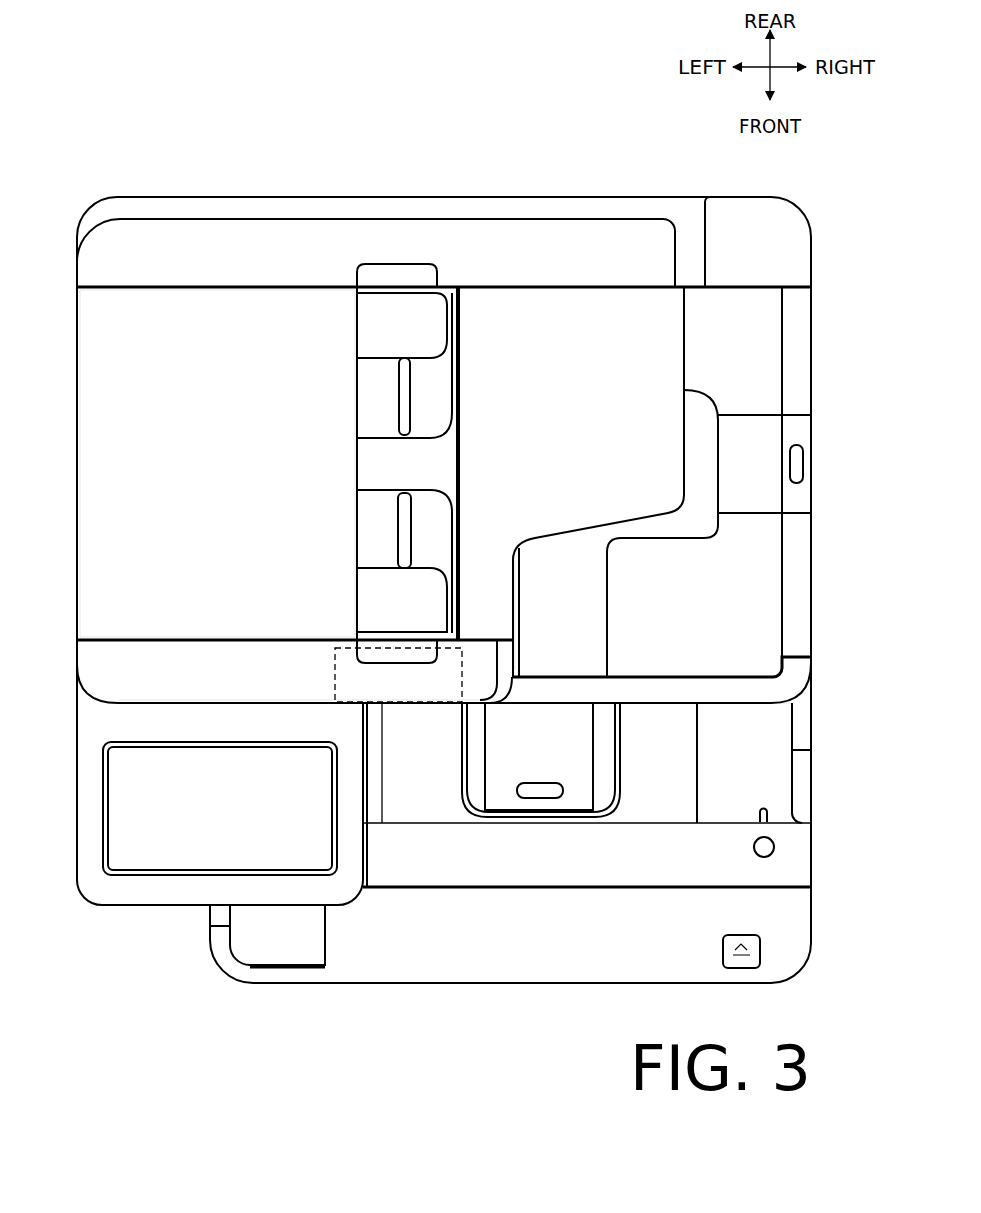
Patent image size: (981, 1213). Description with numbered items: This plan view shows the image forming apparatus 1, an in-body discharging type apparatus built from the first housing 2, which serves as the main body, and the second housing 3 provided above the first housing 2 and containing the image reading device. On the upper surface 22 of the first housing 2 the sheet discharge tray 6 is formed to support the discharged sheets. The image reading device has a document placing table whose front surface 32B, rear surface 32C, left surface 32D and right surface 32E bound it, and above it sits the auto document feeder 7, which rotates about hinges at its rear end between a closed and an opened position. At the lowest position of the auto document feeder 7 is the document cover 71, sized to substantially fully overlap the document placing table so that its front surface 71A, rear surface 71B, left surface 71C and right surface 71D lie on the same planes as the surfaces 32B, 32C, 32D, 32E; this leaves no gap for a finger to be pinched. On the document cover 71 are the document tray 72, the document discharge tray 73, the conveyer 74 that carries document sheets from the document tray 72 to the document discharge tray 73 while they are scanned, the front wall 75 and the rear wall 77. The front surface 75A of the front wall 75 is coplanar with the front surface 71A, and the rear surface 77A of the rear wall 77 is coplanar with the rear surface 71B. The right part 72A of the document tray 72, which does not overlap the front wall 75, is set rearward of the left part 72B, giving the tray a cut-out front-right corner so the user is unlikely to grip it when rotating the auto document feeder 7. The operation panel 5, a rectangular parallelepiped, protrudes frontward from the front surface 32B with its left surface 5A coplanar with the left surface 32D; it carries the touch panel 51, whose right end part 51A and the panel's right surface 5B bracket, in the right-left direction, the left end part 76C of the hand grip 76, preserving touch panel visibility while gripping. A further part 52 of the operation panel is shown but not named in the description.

The image forming apparatus 1 is at (126, 152).
The first housing 2 is at (208, 968).
The second housing 3 is at (190, 188).
The operation panel 5 is at (130, 908).
The left surface 5A is at (73, 870).
The right surface 5B is at (365, 848).
The sheet discharge tray 6 is at (405, 722).
The auto document feeder 7 is at (245, 195).
The upper surface 22 is at (235, 970).
The front surface 32B is at (720, 705).
The rear surface 32C is at (748, 197).
The left surface 32D is at (72, 470).
The right surface 32E is at (812, 402).
The touch panel 51 is at (200, 857).
The right end part 51A is at (340, 862).
The operation panel frame 52 is at (157, 897).
The document cover 71 is at (813, 333).
The front surface 71A is at (665, 705).
The rear surface 71B is at (705, 197).
The left surface 71C is at (72, 432).
The right surface 71D is at (812, 380).
The document tray 72 is at (667, 352).
The right part 72A is at (660, 330).
The left part 72B is at (490, 597).
The document discharge tray 73 is at (750, 551).
The conveyer 74 is at (183, 325).
The front wall 75 is at (265, 690).
The front surface 75A is at (208, 705).
The hand grip 76 is at (432, 693).
The left end part 76C is at (340, 705).
The rear wall 77 is at (484, 210).
The rear surface 77A is at (532, 197).